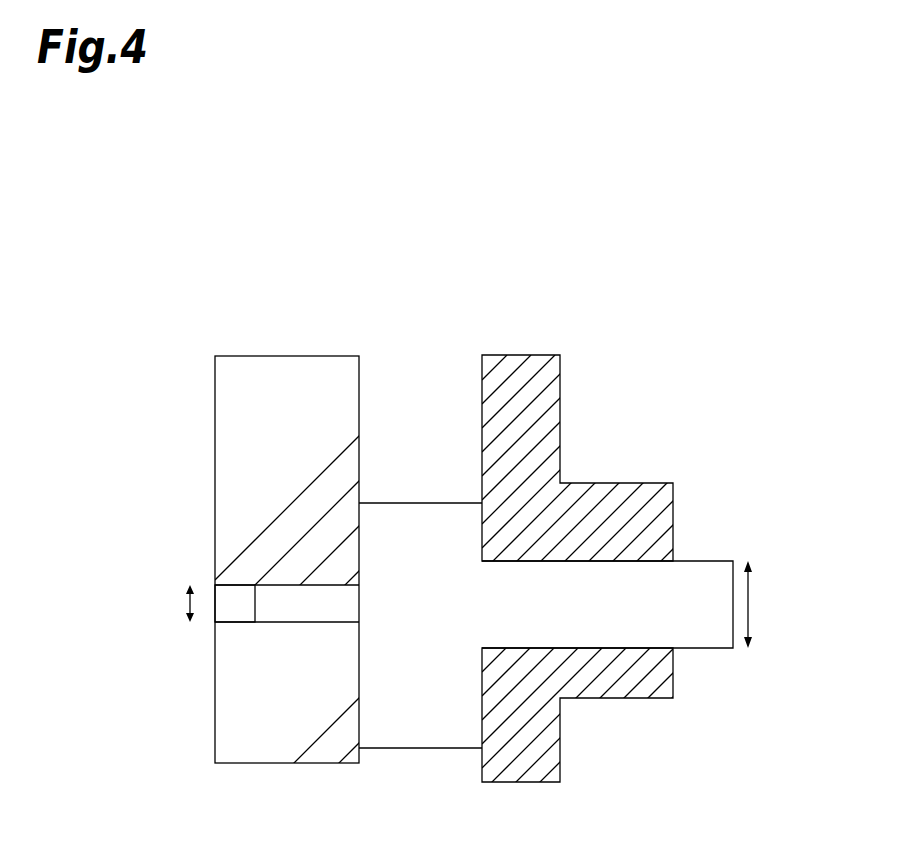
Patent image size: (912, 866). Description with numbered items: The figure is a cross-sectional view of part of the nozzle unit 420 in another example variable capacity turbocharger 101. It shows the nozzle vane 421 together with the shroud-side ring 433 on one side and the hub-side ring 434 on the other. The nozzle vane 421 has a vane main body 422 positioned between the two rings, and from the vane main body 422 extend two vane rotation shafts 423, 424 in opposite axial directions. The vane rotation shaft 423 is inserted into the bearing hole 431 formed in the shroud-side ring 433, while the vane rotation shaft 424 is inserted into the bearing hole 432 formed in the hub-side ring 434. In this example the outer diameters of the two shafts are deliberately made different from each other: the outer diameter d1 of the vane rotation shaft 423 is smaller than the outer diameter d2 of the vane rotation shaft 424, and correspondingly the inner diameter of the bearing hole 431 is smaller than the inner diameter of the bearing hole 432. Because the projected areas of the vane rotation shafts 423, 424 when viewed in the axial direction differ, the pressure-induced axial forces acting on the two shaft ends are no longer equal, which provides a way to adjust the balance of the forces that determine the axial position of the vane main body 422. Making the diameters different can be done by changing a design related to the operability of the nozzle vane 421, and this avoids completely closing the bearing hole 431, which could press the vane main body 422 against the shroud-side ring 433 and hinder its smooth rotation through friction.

The variable capacity turbocharger 101 is at (643, 216).
The nozzle unit 420 is at (203, 341).
The nozzle vane 421 is at (424, 500).
The vane main body 422 is at (432, 722).
The vane rotation shaft 423 is at (300, 615).
The vane rotation shaft 424 is at (630, 628).
The bearing hole 431 is at (236, 590).
The bearing hole 432 is at (643, 563).
The shroud-side ring 433 is at (288, 385).
The hub-side ring 434 is at (527, 390).
The outer diameter d1 is at (171, 603).
The outer diameter d2 is at (766, 604).